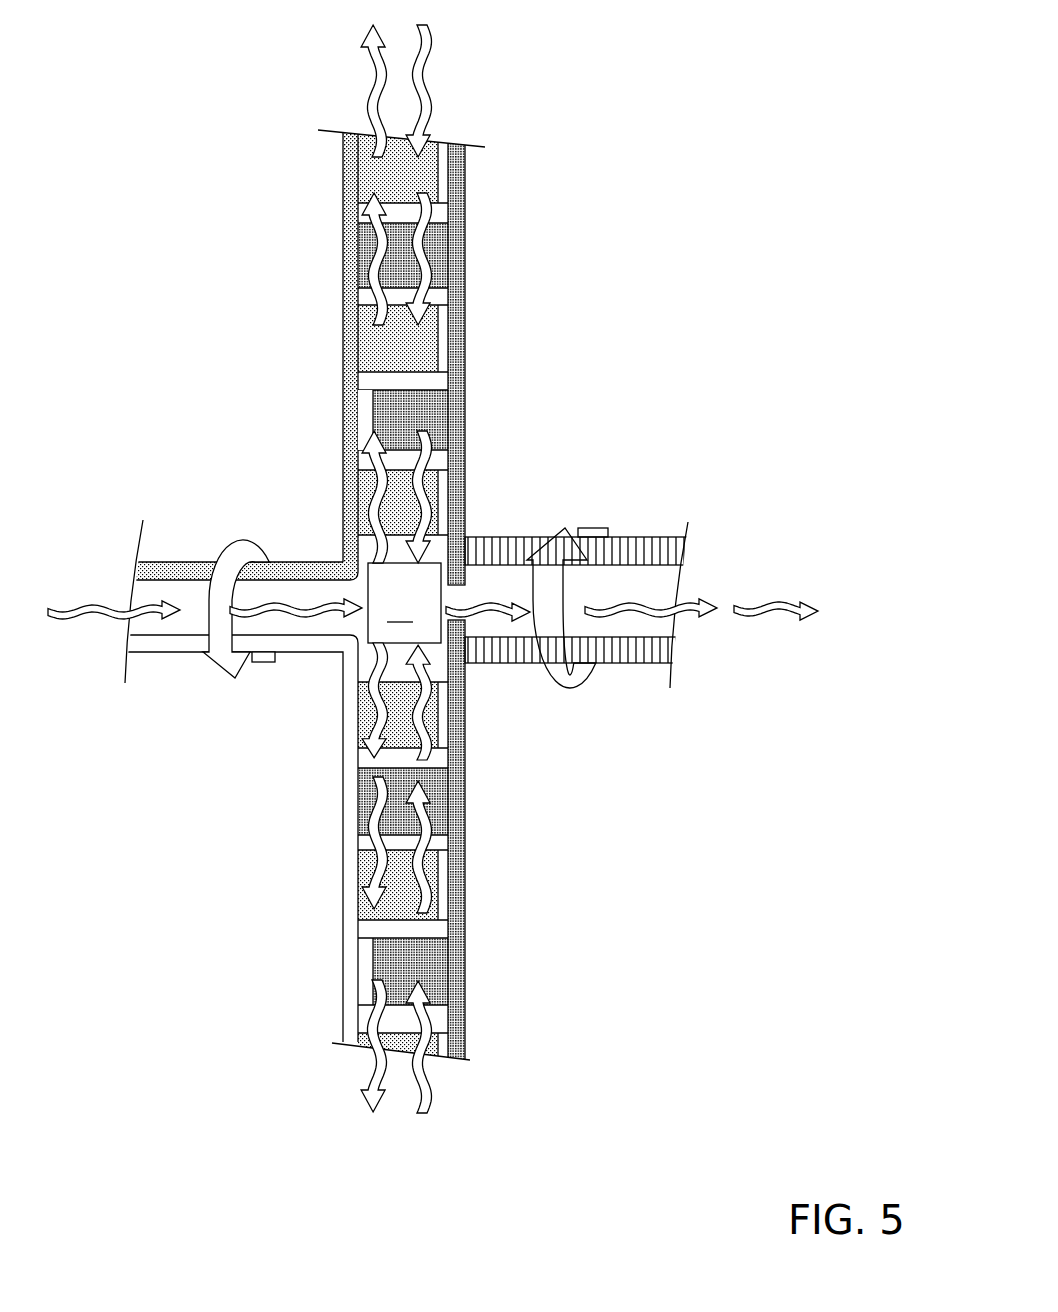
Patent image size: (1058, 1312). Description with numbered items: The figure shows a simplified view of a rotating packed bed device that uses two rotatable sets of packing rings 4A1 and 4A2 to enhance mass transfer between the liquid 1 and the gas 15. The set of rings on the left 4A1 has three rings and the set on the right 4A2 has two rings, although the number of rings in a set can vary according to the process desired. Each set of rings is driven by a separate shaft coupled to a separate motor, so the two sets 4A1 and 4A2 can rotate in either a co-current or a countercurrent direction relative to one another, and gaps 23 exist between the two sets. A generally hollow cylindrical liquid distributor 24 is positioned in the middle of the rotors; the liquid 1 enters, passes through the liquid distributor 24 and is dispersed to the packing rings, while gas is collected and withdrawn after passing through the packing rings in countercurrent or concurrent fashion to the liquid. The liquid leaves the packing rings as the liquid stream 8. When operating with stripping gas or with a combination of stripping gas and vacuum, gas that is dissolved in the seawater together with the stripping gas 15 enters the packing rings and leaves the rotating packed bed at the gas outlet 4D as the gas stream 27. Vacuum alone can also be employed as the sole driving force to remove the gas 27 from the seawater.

The liquid 1 is at (53, 607).
The liquid leaving the packing rings 8 is at (373, 82).
The gas 15 is at (428, 79).
The rotatable set of packing rings 4A1 is at (350, 218).
The rotatable set of packing rings 4A2 is at (466, 260).
The gaps 23 is at (372, 389).
The generally hollow cylindrical liquid distributor 24 is at (404, 603).
The gas outlet 4D is at (661, 537).
The gas removed from the seawater 27 is at (783, 606).